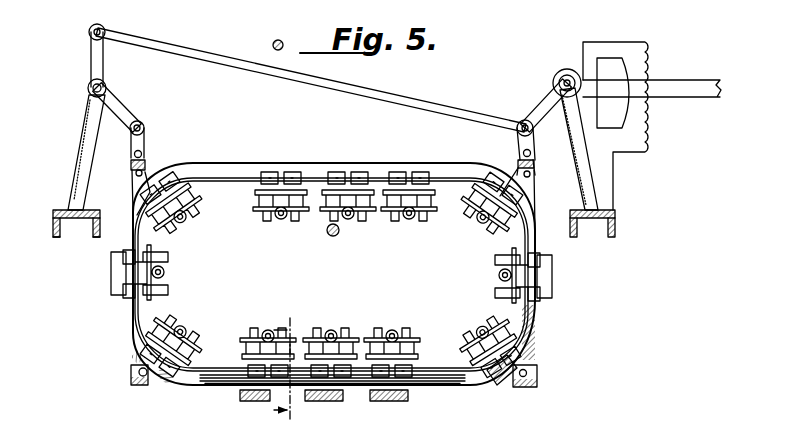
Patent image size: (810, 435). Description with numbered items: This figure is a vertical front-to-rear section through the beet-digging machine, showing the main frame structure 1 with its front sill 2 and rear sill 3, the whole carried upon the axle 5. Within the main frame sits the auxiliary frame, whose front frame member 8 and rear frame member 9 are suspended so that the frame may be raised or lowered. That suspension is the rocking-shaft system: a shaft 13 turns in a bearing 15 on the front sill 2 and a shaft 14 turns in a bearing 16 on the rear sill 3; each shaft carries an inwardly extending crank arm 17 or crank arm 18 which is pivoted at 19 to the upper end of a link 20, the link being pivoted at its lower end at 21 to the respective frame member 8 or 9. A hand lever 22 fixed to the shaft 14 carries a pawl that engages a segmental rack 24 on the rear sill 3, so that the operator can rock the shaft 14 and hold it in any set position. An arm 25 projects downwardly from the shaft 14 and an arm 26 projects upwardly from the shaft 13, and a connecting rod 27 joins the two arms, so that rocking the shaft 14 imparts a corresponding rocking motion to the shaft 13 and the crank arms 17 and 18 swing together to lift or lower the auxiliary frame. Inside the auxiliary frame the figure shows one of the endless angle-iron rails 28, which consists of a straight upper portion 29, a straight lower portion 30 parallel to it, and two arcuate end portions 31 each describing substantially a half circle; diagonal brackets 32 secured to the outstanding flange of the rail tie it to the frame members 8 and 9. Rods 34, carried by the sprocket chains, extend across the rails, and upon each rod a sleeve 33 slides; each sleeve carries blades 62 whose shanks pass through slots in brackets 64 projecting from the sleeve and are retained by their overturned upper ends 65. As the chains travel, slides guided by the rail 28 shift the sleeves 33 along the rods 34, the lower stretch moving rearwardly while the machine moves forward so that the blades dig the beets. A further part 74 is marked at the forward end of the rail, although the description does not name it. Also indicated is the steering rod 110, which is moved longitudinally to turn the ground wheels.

The frame structure 1 is at (53, 223).
The front sill 2 is at (87, 236).
The rear sill 3 is at (597, 236).
The axle 5 is at (333, 238).
The front frame member 8 is at (150, 162).
The rear frame member 9 is at (517, 168).
The shaft 13 is at (106, 85).
The shaft 14 is at (562, 68).
The bearing 15 is at (72, 190).
The bearing 16 is at (598, 168).
The crank arm 17 is at (117, 106).
The crank arm 18 is at (541, 107).
The pivotal connection 19 is at (143, 122).
The link 20 is at (146, 143).
The pivotal connection 21 is at (124, 172).
The hand lever 22 is at (690, 88).
The segmental rack 24 is at (652, 56).
The arm 25 is at (535, 172).
The arm 26 is at (90, 45).
The connecting rod 27 is at (380, 95).
The rail 28 is at (382, 170).
The upper portion 29 is at (322, 165).
The lower portion 30 is at (362, 388).
The arcuate end portion 31 is at (133, 318).
The bracket 32 is at (505, 388).
The sleeve 33 is at (200, 221).
The rod 34 is at (207, 235).
The blade 62 is at (555, 276).
The bracket 64 is at (435, 213).
The overturned upper end 65 is at (492, 288).
The clamp 74 is at (103, 272).
The rod 110 is at (274, 42).